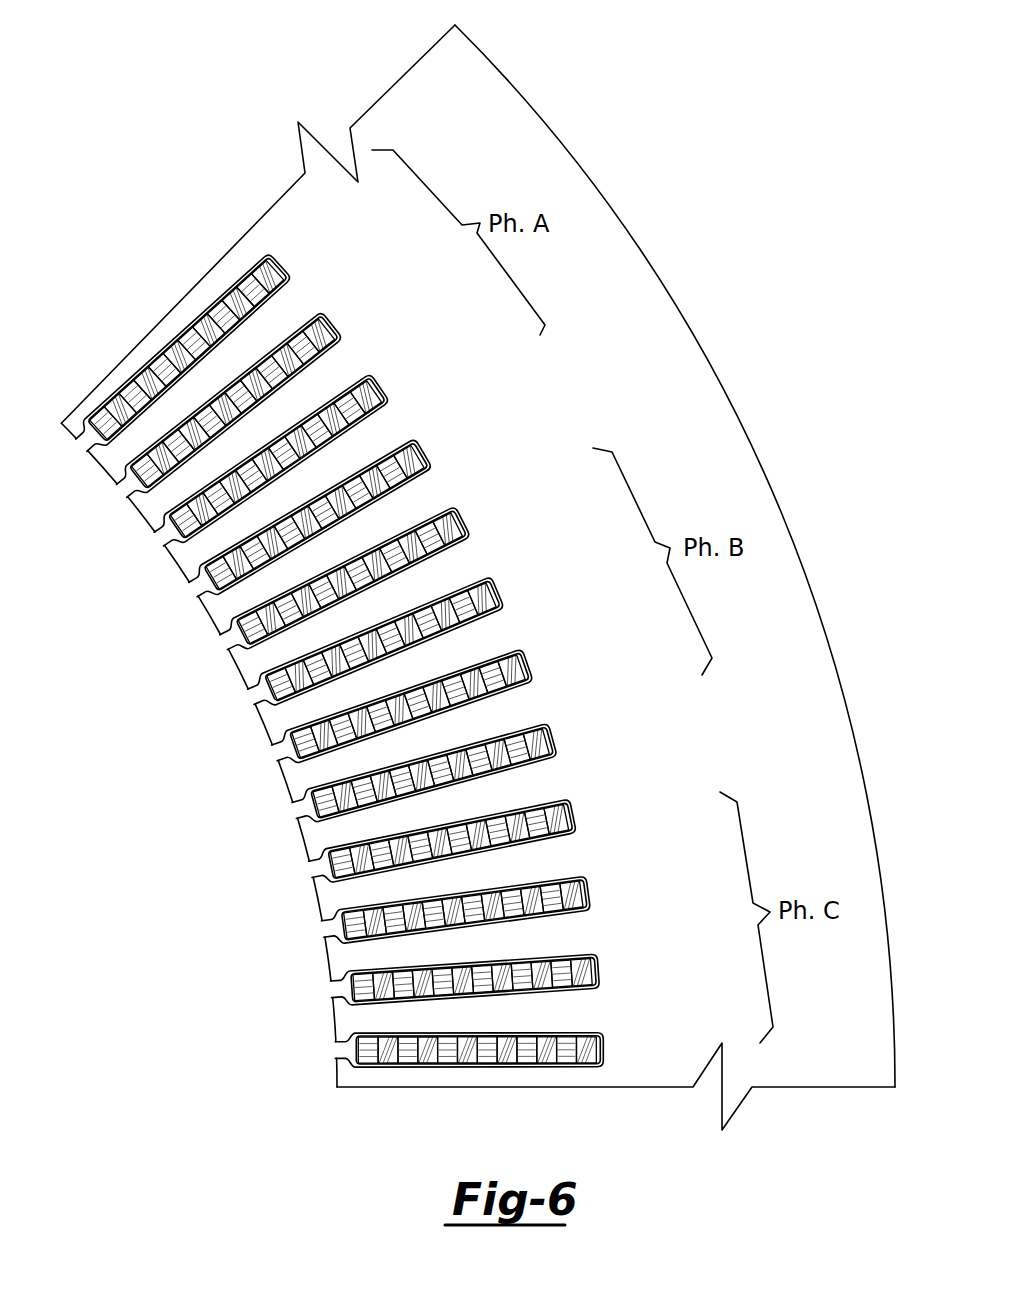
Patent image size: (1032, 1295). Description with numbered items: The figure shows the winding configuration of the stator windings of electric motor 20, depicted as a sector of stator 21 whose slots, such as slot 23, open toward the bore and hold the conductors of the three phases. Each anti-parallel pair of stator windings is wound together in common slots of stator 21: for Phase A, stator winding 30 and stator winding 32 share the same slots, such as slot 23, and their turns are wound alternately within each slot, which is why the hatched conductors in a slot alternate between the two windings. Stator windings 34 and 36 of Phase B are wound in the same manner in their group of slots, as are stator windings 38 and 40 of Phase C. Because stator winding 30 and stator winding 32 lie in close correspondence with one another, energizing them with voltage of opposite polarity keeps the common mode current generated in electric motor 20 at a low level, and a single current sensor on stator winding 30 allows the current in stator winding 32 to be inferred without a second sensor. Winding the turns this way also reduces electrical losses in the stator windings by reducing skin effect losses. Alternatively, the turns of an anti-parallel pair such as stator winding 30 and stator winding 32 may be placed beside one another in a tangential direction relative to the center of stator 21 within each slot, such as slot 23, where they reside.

The electric motor 20 is at (566, 139).
The stator 21 is at (640, 365).
The slot 23 is at (168, 538).
The stator winding 30 is at (340, 425).
The stator winding 32 is at (350, 405).
The stator winding 34 is at (480, 688).
The stator winding 36 is at (493, 668).
The stator winding 38 is at (562, 965).
The stator winding 40 is at (540, 975).